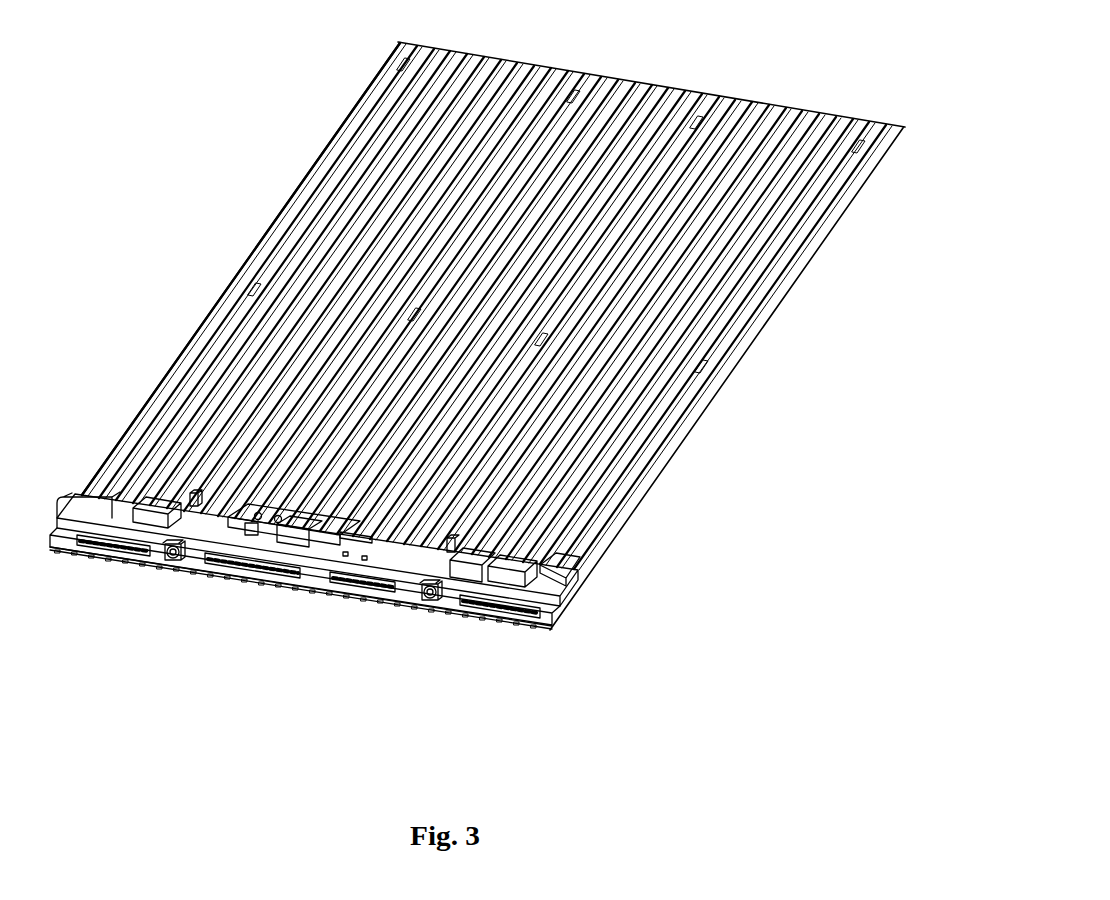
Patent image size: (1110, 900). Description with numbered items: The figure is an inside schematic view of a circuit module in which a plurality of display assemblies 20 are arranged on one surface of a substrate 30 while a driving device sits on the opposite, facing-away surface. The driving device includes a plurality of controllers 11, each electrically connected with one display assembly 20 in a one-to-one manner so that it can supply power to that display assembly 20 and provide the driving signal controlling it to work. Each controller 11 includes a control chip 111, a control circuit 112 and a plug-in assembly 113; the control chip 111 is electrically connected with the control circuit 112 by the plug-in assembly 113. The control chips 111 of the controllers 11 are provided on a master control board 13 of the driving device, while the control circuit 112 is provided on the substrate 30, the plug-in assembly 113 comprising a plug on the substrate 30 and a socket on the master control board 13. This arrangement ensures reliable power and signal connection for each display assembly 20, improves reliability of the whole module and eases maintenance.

The controller 11 is at (87, 547).
The master control board 13 is at (95, 493).
The display assembly 20 is at (755, 340).
The substrate 30 is at (328, 163).
The control chip 111 is at (507, 615).
The control circuit 112 is at (572, 568).
The plug-in assembly 113 is at (353, 582).